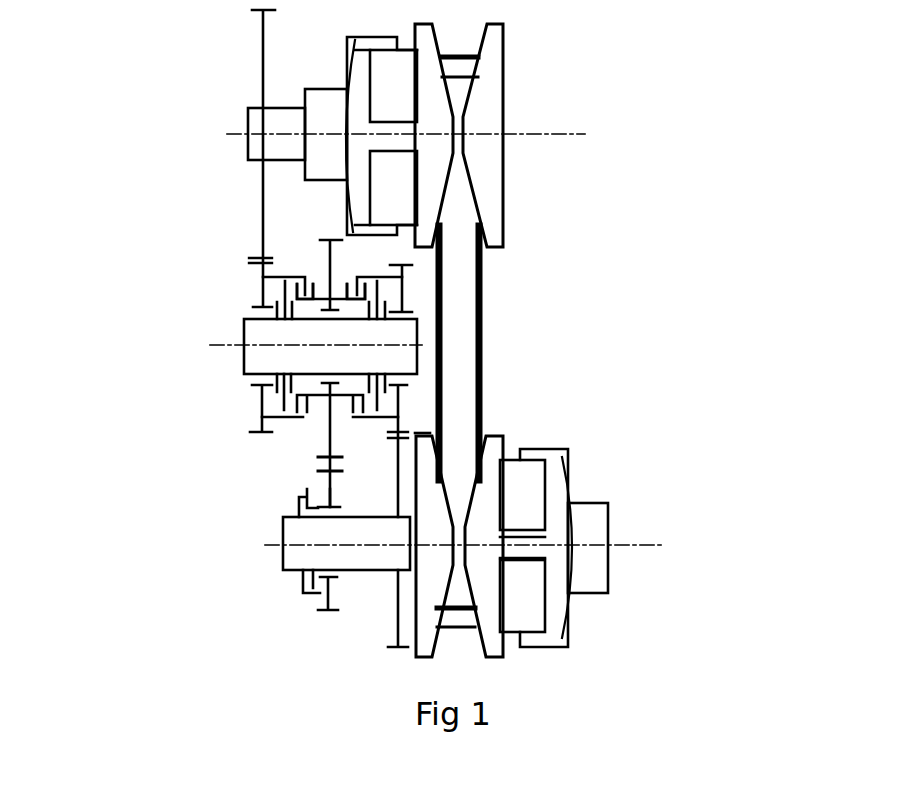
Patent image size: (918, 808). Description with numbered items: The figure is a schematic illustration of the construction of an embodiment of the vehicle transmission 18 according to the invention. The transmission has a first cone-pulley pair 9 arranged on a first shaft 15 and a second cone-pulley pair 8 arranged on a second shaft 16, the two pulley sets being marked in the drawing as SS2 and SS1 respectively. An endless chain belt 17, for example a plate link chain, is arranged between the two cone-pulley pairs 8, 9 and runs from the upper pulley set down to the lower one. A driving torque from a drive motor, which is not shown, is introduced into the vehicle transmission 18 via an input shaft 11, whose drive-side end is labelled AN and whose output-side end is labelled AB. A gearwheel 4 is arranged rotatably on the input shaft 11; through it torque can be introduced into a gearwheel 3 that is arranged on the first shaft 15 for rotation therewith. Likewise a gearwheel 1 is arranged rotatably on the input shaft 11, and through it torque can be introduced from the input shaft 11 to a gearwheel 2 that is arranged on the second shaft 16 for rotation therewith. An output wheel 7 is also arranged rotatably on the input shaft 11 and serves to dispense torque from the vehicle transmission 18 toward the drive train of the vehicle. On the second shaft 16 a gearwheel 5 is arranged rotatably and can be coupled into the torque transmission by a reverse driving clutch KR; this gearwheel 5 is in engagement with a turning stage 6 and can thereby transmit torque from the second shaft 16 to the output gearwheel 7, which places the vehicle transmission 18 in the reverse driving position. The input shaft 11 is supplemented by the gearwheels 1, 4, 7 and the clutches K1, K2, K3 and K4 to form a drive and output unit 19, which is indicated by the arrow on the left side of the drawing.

The gearwheel 1 is at (388, 288).
The gearwheel 2 is at (396, 516).
The gearwheel 3 is at (261, 158).
The gearwheel 4 is at (276, 283).
The gearwheel 5 is at (339, 494).
The turning stage 6 is at (339, 463).
The output wheel 7 is at (330, 445).
The second cone-pulley pair 8 is at (525, 613).
The first cone-pulley pair 9 is at (495, 48).
The input shaft 11 is at (311, 369).
The first shaft 15 is at (260, 123).
The second shaft 16 is at (293, 553).
The endless chain belt 17 is at (458, 298).
The vehicle transmission 18 is at (281, 715).
The drive and output unit 19 is at (126, 358).
The clutch K1 is at (290, 286).
The clutch K2 is at (313, 276).
The clutch K3 is at (352, 276).
The clutch K4 is at (377, 286).
The reverse driving clutch KR is at (305, 491).
The drive input AN is at (211, 393).
The drive output AB is at (331, 267).
The first disk set SS1 is at (515, 567).
The second disk set SS2 is at (496, 123).